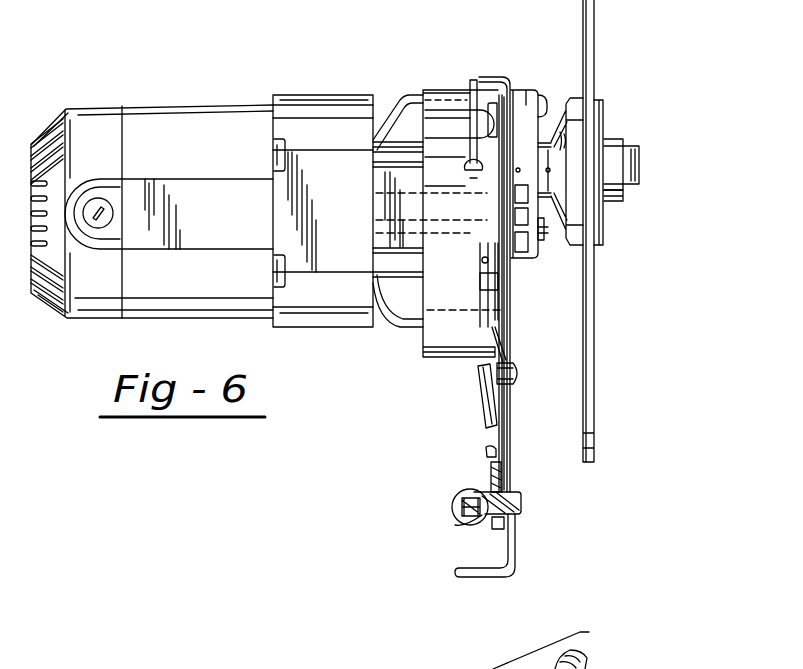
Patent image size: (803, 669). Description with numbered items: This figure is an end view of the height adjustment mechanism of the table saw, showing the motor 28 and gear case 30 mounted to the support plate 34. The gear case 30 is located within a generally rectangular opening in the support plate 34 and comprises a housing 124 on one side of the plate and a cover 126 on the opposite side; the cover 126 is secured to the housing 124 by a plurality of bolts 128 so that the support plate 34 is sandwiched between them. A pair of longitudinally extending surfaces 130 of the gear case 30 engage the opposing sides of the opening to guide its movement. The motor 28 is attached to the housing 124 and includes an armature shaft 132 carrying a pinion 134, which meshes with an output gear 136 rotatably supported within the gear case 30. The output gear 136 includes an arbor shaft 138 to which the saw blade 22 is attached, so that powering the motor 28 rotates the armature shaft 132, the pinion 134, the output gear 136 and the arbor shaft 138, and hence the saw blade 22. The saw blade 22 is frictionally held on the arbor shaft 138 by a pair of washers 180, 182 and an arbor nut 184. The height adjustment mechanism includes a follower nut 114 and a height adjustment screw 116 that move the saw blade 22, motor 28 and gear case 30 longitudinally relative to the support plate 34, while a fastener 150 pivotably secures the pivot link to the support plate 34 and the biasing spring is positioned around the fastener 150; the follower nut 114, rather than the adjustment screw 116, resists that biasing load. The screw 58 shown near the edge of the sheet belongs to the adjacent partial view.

The saw blade 22 is at (596, 406).
The motor 28 is at (235, 125).
The gear case 30 is at (487, 66).
The support plate 34 is at (517, 545).
The screw 58 is at (567, 650).
The follower nut 114 is at (452, 503).
The height adjustment screw 116 is at (472, 490).
The housing 124 is at (415, 340).
The cover 126 is at (526, 100).
The bolts 128 is at (546, 104).
The longitudinally extending surfaces 130 is at (507, 284).
The armature shaft 132 is at (388, 207).
The pinion 134 is at (455, 235).
The output gear 136 is at (445, 288).
The arbor shaft 138 is at (642, 163).
The fastener 150 is at (520, 377).
The washer 180 is at (600, 233).
The washer 182 is at (577, 123).
The arbor nut 184 is at (610, 200).